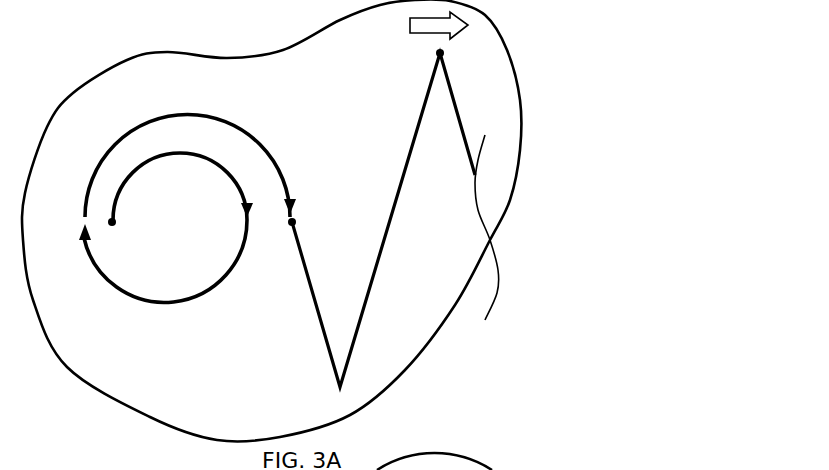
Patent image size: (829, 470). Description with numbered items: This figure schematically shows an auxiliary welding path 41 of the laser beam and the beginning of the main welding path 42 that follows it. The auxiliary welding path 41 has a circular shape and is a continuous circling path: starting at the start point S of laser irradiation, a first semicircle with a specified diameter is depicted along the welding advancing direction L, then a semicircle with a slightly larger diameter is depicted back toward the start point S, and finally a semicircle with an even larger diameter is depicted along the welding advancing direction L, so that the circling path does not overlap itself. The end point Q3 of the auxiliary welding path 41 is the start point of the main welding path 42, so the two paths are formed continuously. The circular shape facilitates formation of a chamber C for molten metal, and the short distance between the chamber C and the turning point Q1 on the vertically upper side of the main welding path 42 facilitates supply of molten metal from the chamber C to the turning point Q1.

The auxiliary welding path 41 is at (105, 151).
The main welding path 42 is at (404, 172).
The chamber C is at (157, 282).
The start point S is at (116, 226).
The turning point Q1 is at (444, 56).
The end point Q3 is at (297, 221).
The welding advancing direction L is at (428, 27).